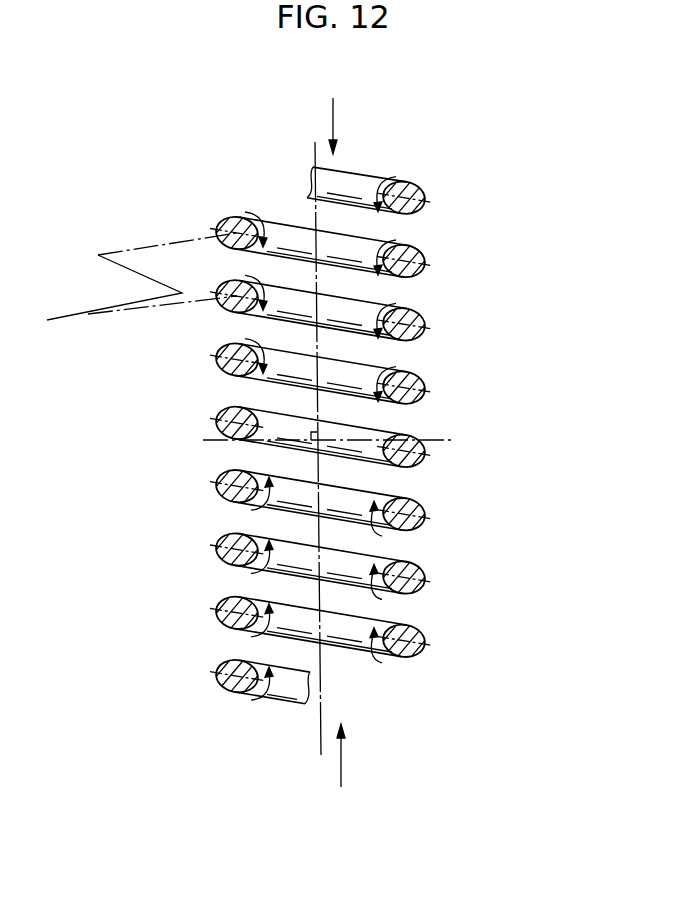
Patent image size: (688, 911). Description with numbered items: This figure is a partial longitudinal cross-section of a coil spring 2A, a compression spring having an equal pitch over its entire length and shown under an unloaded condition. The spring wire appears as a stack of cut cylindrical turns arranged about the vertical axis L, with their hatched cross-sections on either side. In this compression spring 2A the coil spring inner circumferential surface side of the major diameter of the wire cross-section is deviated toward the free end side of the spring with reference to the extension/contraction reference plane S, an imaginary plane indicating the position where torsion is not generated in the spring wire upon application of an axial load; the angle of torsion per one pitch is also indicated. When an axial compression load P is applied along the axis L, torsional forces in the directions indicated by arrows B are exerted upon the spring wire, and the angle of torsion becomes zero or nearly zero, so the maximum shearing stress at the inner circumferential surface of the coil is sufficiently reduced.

The coil spring 2A is at (469, 342).
The arrows indicating torsional force directions B is at (310, 455).
The axial compression load P is at (335, 444).
The axis of spring L is at (311, 434).
The extension/contraction reference plane S is at (342, 438).